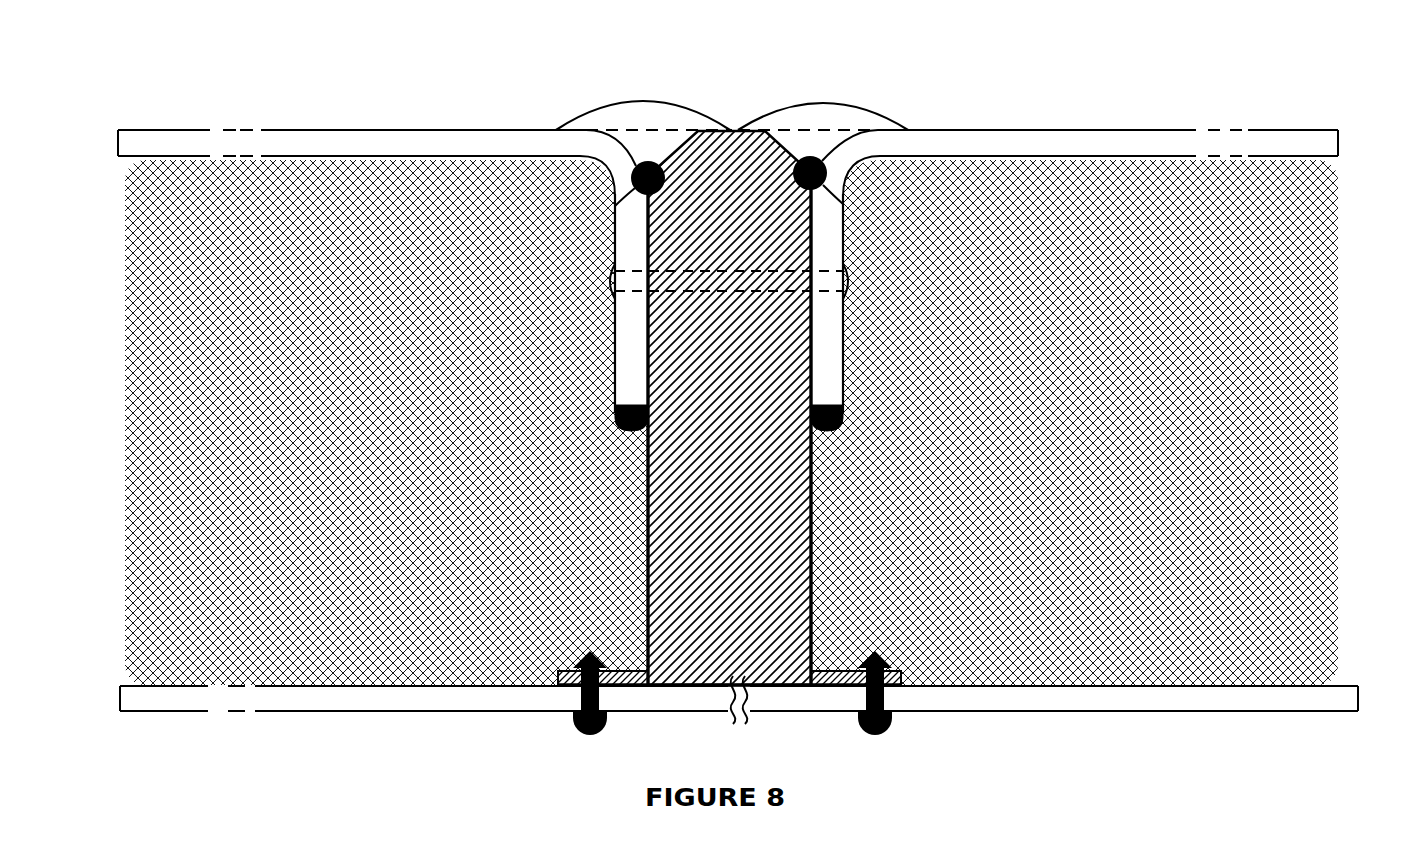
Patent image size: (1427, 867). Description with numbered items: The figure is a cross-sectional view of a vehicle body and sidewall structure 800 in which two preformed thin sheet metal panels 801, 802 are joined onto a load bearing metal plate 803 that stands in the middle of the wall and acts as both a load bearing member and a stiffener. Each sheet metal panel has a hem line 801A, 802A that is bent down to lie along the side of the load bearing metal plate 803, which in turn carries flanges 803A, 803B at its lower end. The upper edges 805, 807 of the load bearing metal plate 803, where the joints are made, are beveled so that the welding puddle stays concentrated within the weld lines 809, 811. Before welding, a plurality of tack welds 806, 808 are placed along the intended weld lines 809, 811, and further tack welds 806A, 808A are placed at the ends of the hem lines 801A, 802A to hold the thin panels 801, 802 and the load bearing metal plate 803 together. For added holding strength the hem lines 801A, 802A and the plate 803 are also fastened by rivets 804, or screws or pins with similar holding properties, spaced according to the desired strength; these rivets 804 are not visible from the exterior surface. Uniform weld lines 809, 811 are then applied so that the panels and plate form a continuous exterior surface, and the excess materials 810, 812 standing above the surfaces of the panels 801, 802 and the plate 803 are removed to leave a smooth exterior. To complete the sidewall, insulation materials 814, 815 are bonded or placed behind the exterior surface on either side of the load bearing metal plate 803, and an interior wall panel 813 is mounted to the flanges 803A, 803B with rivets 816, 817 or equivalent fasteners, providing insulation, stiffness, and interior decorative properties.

The panel joint assembly 800 is at (988, 65).
The sheet metal panel 801 is at (432, 120).
The hem line 801A is at (607, 328).
The sheet metal panel 802 is at (1085, 128).
The hem line 802A is at (838, 330).
The load bearing metal plate 803 is at (760, 540).
The flange 803A is at (552, 667).
The flange 803B is at (893, 665).
The rivets 804 is at (598, 277).
The edge 805 is at (598, 150).
The tack welds 806 is at (605, 190).
The tack welds 806A is at (612, 420).
The edge 807 is at (840, 160).
The tack welds 808 is at (838, 200).
The tack welds 808A is at (830, 420).
The weld line 809 is at (630, 110).
The excess material 810 is at (662, 93).
The weld line 811 is at (805, 112).
The excess material 812 is at (820, 93).
The interior wall panel 813 is at (360, 692).
The insulation material 814 is at (142, 475).
The insulation material 815 is at (1290, 458).
The rivet 816 is at (568, 722).
The rivet 817 is at (882, 720).